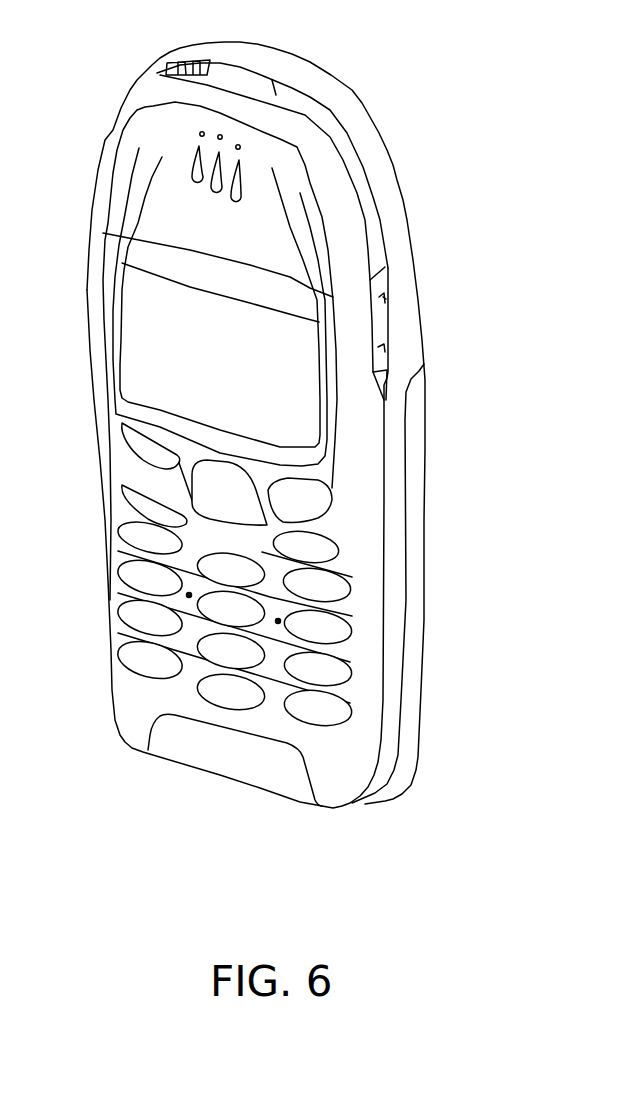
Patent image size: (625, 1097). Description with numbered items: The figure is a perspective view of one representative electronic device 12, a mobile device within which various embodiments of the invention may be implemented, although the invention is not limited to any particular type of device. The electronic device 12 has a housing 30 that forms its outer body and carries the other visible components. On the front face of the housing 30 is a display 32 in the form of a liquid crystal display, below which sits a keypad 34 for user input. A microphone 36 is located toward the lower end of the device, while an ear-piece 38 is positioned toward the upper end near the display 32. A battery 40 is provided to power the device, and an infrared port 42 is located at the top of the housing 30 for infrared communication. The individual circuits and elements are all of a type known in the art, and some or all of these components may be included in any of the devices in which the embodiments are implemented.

The electronic device 12 is at (367, 56).
The housing 30 is at (394, 200).
The display 32 is at (297, 397).
The keypad 34 is at (317, 712).
The microphone 36 is at (175, 748).
The ear-piece 38 is at (198, 152).
The battery 40 is at (413, 695).
The infrared port 42 is at (244, 74).